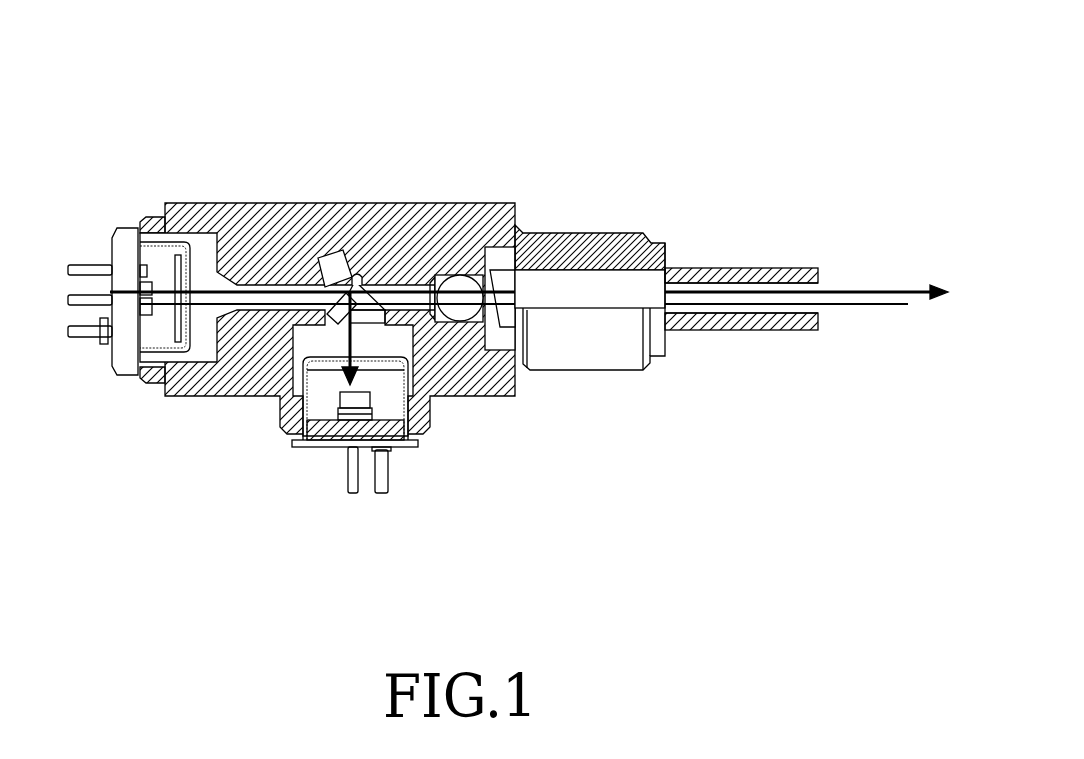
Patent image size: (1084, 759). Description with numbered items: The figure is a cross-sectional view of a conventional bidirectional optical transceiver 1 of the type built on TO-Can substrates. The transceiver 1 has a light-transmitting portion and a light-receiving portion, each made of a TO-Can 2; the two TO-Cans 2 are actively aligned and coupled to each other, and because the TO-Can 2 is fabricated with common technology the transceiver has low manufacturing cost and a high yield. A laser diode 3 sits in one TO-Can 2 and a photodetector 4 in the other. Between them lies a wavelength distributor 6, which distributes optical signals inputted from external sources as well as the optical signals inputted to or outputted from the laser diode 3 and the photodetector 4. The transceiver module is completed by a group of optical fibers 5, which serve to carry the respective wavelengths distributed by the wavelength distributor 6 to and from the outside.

The bidirectional optical transceiver 1 is at (489, 255).
The TO-Can 2 is at (120, 218).
The laser diode 3 is at (138, 297).
The photodetector 4 is at (326, 441).
The group of optical fibers 5 is at (550, 282).
The wavelength distributor 6 is at (334, 298).